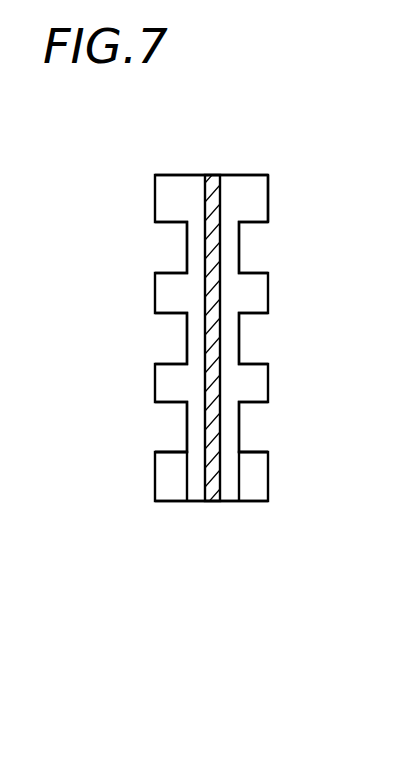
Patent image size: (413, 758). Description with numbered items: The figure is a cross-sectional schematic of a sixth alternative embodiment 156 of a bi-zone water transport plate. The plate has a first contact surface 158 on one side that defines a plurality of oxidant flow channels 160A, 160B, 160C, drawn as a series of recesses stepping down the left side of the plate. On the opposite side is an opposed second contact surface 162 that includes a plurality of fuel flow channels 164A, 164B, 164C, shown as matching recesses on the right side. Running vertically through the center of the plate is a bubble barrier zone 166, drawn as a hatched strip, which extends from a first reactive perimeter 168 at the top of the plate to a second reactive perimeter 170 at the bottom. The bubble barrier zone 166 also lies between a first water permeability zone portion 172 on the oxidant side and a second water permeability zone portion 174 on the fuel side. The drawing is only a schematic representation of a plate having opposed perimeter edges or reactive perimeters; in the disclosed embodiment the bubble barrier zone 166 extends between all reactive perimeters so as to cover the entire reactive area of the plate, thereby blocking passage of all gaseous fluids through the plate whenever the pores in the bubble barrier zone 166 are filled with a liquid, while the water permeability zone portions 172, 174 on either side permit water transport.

The sixth alternative embodiment of a bi-zone water transport plate 156 is at (299, 141).
The first contact surface 158 is at (155, 192).
The oxidant flow channel 160A is at (160, 245).
The oxidant flow channel 160B is at (160, 336).
The oxidant flow channel 160C is at (160, 424).
The second contact surface 162 is at (268, 203).
The fuel flow channel 164A is at (268, 252).
The fuel flow channel 164B is at (268, 341).
The fuel flow channel 164C is at (268, 429).
The bubble barrier zone 166 is at (224, 187).
The first reactive perimeter 168 is at (185, 175).
The second reactive perimeter 170 is at (187, 502).
The first water permeability zone portion 172 is at (168, 481).
The second water permeability zone portion 174 is at (252, 480).